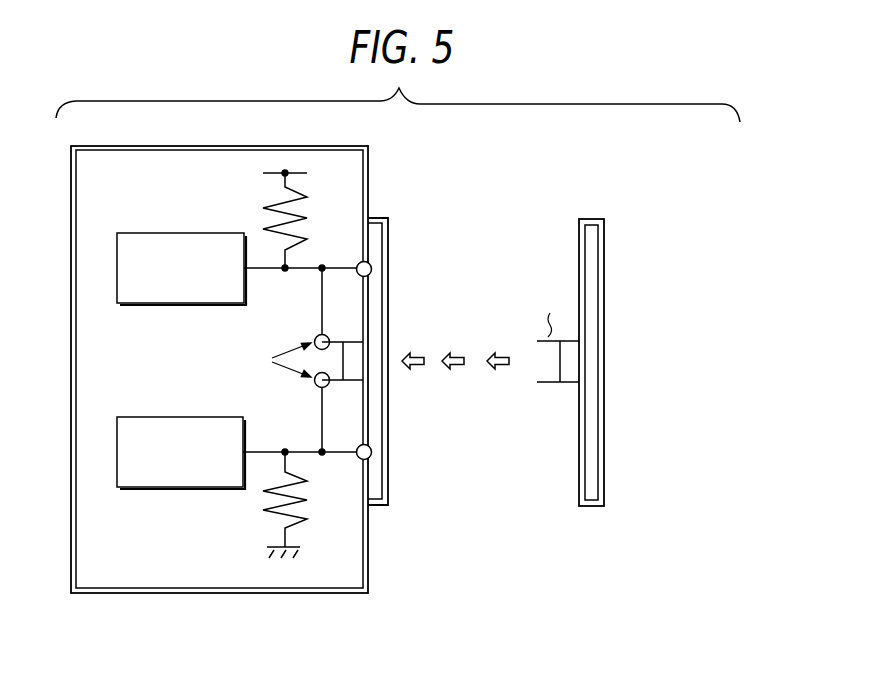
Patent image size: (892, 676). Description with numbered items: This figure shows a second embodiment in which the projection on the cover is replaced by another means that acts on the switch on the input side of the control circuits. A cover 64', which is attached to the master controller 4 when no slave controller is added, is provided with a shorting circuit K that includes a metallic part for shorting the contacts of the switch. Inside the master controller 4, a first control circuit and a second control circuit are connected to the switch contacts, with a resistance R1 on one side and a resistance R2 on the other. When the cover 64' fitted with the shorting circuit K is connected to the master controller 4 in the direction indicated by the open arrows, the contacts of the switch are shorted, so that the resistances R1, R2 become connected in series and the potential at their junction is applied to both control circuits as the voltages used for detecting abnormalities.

The master controller 4 is at (229, 389).
The cover 64' is at (590, 420).
The resistance R1 is at (300, 220).
The resistance R2 is at (300, 499).
The shorting circuit K is at (336, 336).